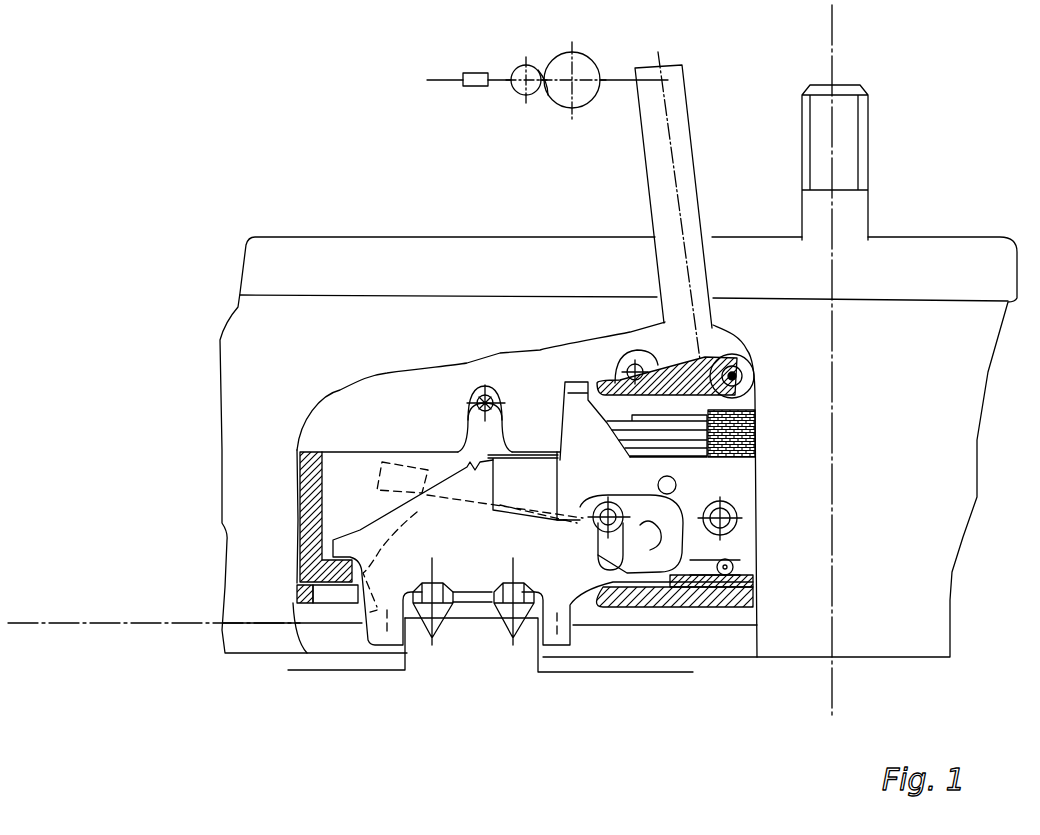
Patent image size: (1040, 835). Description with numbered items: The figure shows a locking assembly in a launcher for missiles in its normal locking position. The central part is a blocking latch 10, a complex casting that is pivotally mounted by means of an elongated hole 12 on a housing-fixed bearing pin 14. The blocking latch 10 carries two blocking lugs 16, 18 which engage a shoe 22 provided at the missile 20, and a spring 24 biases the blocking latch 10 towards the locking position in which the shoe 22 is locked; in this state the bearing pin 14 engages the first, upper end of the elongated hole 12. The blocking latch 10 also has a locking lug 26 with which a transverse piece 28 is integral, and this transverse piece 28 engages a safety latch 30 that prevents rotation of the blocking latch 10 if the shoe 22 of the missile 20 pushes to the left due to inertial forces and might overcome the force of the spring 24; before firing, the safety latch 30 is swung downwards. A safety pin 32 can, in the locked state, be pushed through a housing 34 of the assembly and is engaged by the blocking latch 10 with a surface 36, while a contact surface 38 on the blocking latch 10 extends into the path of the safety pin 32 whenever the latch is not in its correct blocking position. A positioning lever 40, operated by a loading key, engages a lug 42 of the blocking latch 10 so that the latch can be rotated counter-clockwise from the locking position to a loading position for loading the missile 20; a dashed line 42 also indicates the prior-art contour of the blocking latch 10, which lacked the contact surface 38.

The blocking latch 10 is at (363, 540).
The elongated hole 12 is at (641, 560).
The bearing pin 14 is at (596, 508).
The blocking lug 16 is at (390, 630).
The blocking lug 18 is at (558, 633).
The missile 20 is at (305, 688).
The shoe 22 is at (475, 635).
The spring 24 is at (722, 405).
The locking lug 26 is at (580, 423).
The transverse piece 28 is at (572, 377).
The safety latch 30 is at (678, 392).
The safety pin 32 is at (640, 497).
The housing 34 is at (757, 608).
The surface 36 is at (640, 447).
The contact surface 38 is at (660, 565).
The positioning lever 40 is at (735, 553).
The lug 42 is at (740, 500).